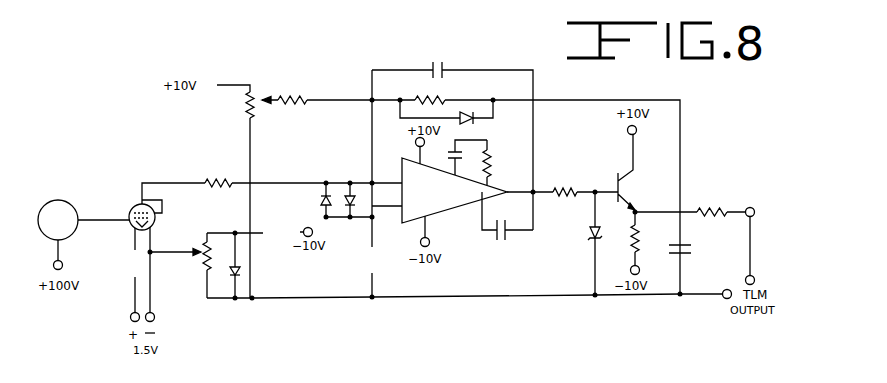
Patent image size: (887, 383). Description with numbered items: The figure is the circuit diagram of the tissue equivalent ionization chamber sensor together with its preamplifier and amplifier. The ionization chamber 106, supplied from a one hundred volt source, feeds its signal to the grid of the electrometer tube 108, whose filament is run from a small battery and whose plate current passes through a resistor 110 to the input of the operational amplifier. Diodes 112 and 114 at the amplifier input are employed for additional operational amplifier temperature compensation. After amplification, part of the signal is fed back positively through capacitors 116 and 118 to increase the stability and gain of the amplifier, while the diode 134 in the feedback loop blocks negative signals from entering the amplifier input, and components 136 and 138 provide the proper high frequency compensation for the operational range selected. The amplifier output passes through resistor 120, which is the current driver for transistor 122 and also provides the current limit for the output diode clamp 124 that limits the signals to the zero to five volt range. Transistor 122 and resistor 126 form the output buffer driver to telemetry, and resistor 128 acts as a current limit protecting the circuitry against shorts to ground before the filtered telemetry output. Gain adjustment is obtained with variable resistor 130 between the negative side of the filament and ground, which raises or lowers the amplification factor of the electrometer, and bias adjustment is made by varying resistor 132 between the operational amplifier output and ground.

The ionization chamber 106 is at (52, 200).
The electrometer tube 108 is at (125, 202).
The resistor 110 is at (216, 180).
The diode 112 is at (320, 199).
The diode 114 is at (358, 190).
The capacitor 116 is at (445, 64).
The capacitor 118 is at (507, 243).
The resistor 120 is at (562, 183).
The transistor 122 is at (636, 182).
The output diode clamp 124 is at (601, 224).
The resistor 126 is at (643, 243).
The resistor 128 is at (712, 204).
The variable resistor 130 is at (202, 267).
The resistor 132 is at (247, 105).
The diode 134 is at (474, 122).
The component 136 is at (450, 157).
The component 138 is at (492, 163).